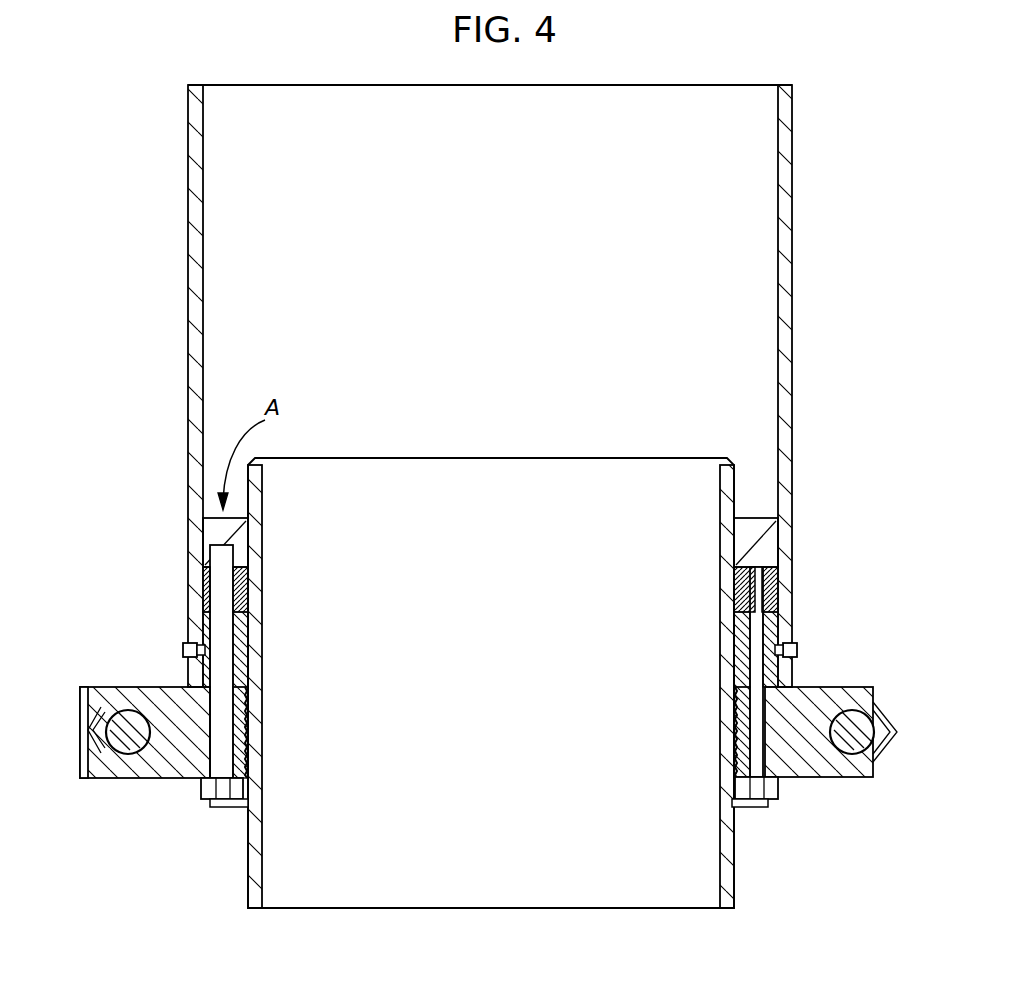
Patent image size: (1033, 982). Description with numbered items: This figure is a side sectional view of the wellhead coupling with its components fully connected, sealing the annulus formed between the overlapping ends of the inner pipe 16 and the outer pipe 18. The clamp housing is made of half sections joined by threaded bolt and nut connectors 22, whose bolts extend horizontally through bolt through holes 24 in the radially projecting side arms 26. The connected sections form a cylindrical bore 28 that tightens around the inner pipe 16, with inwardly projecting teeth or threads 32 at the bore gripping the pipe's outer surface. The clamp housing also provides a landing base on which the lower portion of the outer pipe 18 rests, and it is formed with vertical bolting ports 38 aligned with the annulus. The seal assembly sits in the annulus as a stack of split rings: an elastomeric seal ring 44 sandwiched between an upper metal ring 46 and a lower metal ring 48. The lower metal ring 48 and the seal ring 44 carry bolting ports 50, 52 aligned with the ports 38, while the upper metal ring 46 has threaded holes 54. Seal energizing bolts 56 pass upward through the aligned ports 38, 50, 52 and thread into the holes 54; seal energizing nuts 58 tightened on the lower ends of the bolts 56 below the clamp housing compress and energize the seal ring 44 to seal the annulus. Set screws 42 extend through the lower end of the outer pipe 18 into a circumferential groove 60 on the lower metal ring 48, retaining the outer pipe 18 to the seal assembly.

The inner pipe 16 is at (734, 897).
The outer pipe 18 is at (792, 277).
The threaded bolt and nut connectors 22 is at (127, 720).
The bolt through holes 24 is at (123, 753).
The side arms 26 is at (178, 762).
The cylindrical bore 28 is at (250, 772).
The teeth or threads 32 is at (250, 744).
The bolting ports 38 is at (230, 717).
The set screws 42 is at (183, 649).
The elastomeric seal ring 44 is at (204, 588).
The upper metal ring 46 is at (212, 524).
The lower metal ring 48 is at (209, 633).
The bolting ports 50 is at (206, 676).
The bolting ports 52 is at (204, 608).
The threaded holes 54 is at (204, 548).
The seal energizing bolts 56 is at (757, 748).
The seal energizing nuts 58 is at (768, 788).
The circumferential groove 60 is at (205, 649).